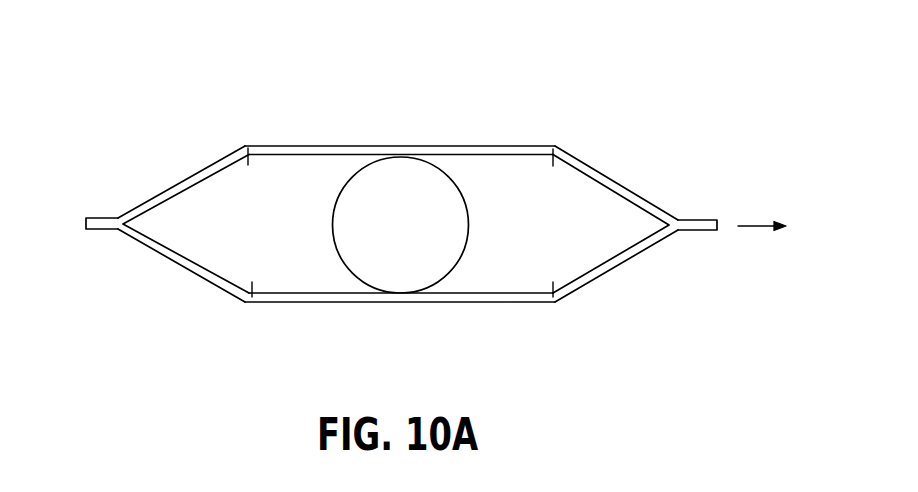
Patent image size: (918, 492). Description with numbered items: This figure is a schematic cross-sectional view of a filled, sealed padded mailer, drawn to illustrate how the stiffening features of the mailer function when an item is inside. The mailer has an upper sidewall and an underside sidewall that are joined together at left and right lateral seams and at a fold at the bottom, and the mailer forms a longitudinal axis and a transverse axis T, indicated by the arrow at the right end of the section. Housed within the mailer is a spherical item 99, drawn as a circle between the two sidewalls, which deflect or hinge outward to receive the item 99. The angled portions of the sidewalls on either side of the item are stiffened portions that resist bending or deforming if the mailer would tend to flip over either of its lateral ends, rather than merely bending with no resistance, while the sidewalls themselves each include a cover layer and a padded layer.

The spherical item 99 is at (416, 283).
The transverse axis T is at (771, 224).